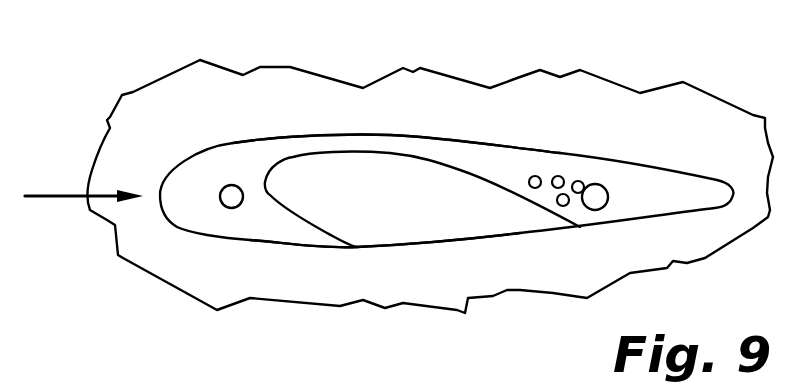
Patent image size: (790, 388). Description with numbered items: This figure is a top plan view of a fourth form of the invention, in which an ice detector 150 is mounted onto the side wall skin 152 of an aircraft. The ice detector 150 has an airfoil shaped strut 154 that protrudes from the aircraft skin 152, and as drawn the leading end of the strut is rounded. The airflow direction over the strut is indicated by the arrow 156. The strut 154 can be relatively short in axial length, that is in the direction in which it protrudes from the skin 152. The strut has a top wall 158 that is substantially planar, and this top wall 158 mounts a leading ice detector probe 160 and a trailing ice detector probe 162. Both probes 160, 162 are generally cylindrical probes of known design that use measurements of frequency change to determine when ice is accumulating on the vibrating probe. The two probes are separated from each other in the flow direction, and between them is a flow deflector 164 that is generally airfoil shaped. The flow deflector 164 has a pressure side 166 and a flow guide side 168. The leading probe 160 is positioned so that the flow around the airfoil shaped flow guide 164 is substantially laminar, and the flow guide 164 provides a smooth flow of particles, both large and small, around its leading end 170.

The ice detector 150 is at (293, 248).
The side wall skin 152 is at (286, 75).
The airfoil shaped strut 154 is at (453, 157).
The arrow 156 is at (96, 193).
The top wall 158 is at (527, 170).
The leading ice detector probe 160 is at (220, 202).
The trailing ice detector probe 162 is at (608, 191).
The flow deflector 164 is at (388, 153).
The pressure side 166 is at (323, 228).
The flow guide side 168 is at (323, 153).
The leading end 170 is at (290, 165).